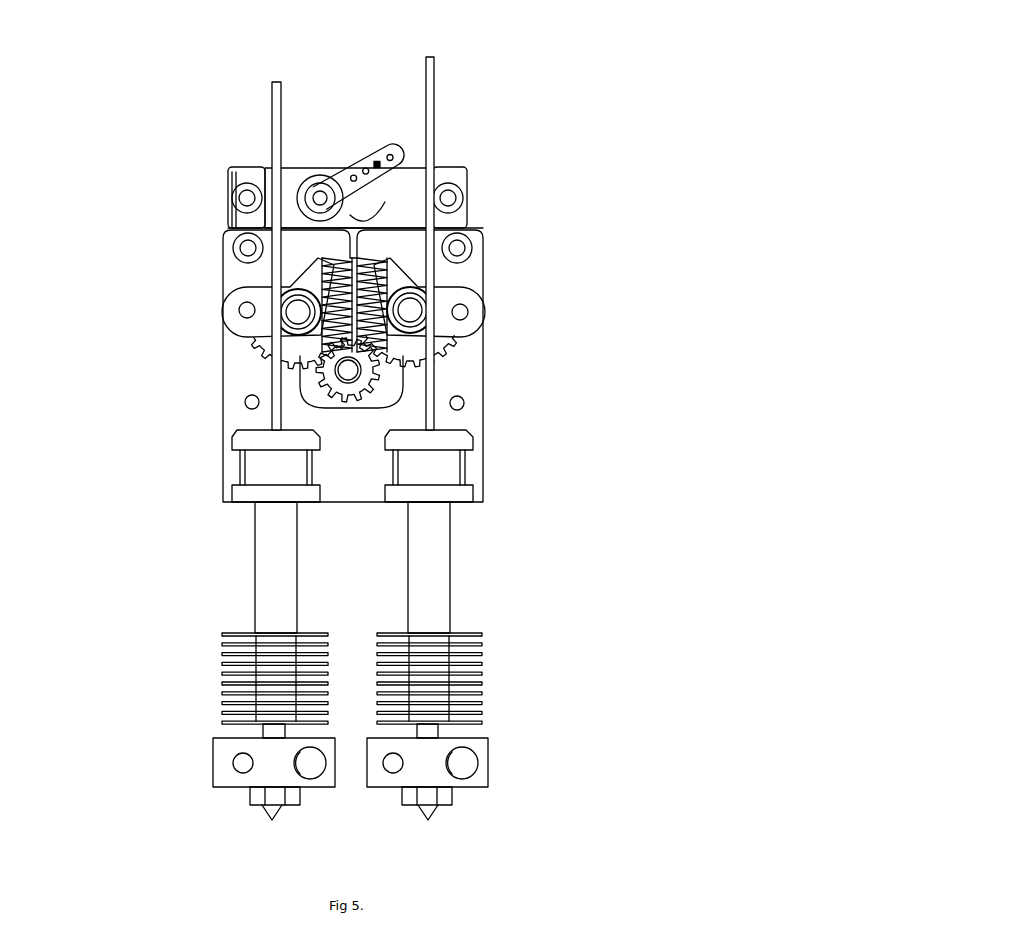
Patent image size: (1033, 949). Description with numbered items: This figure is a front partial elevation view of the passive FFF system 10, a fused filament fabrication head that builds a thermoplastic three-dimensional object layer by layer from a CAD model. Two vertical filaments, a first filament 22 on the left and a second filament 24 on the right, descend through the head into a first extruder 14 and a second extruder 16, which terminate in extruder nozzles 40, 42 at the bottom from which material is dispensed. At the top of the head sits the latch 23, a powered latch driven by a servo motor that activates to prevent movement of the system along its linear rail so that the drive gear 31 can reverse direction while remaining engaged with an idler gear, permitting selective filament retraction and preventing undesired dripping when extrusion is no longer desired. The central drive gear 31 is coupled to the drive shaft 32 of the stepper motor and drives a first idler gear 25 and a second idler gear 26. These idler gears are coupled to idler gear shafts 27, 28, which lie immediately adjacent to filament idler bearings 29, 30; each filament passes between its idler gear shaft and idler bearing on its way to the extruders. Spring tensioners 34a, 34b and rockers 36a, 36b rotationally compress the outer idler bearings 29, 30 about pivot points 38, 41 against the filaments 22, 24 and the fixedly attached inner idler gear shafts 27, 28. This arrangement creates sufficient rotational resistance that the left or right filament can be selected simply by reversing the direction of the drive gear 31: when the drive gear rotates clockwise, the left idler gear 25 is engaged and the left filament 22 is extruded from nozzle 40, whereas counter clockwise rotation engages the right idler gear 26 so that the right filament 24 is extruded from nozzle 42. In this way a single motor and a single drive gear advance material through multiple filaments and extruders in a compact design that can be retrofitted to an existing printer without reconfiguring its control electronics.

The passive FFF system 10 is at (757, 230).
The first extruder 14 is at (278, 443).
The second extruder 16 is at (435, 442).
The first filament 22 is at (288, 100).
The latch 23 is at (392, 185).
The second filament 24 is at (432, 122).
The first idler gear 25 is at (252, 350).
The second idler gear 26 is at (460, 345).
The idler gear shaft 27 is at (290, 298).
The idler gear shaft 28 is at (413, 297).
The filament idler bearing 29 is at (222, 313).
The filament idler bearing 30 is at (485, 305).
The drive gear 31 is at (348, 372).
The drive shaft 32 is at (327, 378).
The spring tensioner 34a is at (322, 260).
The spring tensioner 34b is at (400, 270).
The rocker 36a is at (278, 248).
The rocker 36b is at (430, 245).
The pivot point 38 is at (237, 230).
The extruder nozzle 40 is at (272, 820).
The pivot point 41 is at (485, 242).
The extruder nozzle 42 is at (428, 820).